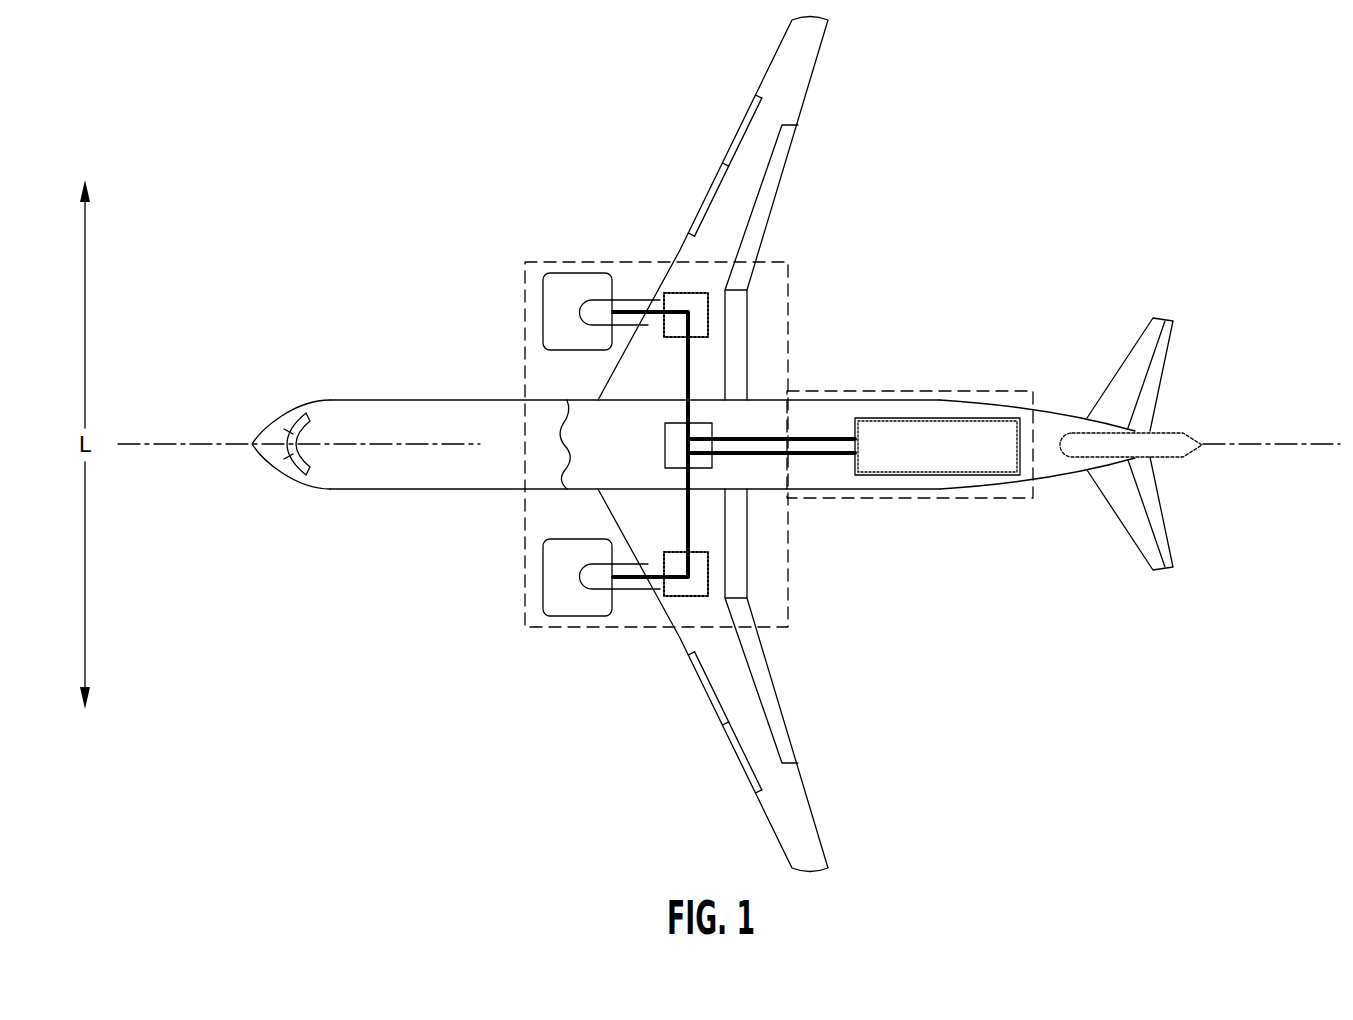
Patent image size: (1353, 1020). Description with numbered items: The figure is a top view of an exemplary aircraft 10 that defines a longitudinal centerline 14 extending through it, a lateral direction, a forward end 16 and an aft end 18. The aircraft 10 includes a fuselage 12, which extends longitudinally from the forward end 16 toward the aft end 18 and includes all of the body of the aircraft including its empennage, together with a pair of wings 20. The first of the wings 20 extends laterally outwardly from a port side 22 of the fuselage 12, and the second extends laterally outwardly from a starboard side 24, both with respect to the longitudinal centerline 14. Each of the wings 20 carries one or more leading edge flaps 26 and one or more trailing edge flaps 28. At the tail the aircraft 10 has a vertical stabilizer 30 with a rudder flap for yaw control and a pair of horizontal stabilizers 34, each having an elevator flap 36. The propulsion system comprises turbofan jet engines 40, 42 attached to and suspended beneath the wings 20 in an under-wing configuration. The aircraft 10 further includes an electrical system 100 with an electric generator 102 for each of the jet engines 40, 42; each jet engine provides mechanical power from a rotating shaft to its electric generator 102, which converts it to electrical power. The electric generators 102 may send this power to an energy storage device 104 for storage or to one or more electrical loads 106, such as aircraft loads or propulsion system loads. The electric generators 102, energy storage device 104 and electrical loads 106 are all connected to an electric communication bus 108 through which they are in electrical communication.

The aircraft 10 is at (984, 148).
The fuselage 12 is at (326, 472).
The longitudinal centerline 14 is at (149, 446).
The forward end 16 is at (251, 476).
The aft end 18 is at (1117, 568).
The wings 20 is at (802, 50).
The port side 22 is at (426, 516).
The starboard side 24 is at (434, 391).
The leading edge flaps 26 is at (700, 690).
The trailing edge flaps 28 is at (778, 697).
The vertical stabilizer 30 is at (1160, 460).
The horizontal stabilizers 34 is at (1137, 345).
The elevator flap 36 is at (1165, 347).
The turbofan jet engine 40 is at (561, 610).
The turbofan jet engine 42 is at (565, 280).
The electrical system 100 is at (873, 389).
The electric generators 102 is at (710, 302).
The energy storage device 104 is at (712, 430).
The electrical loads 106 is at (937, 446).
The electric communication bus 108 is at (767, 472).